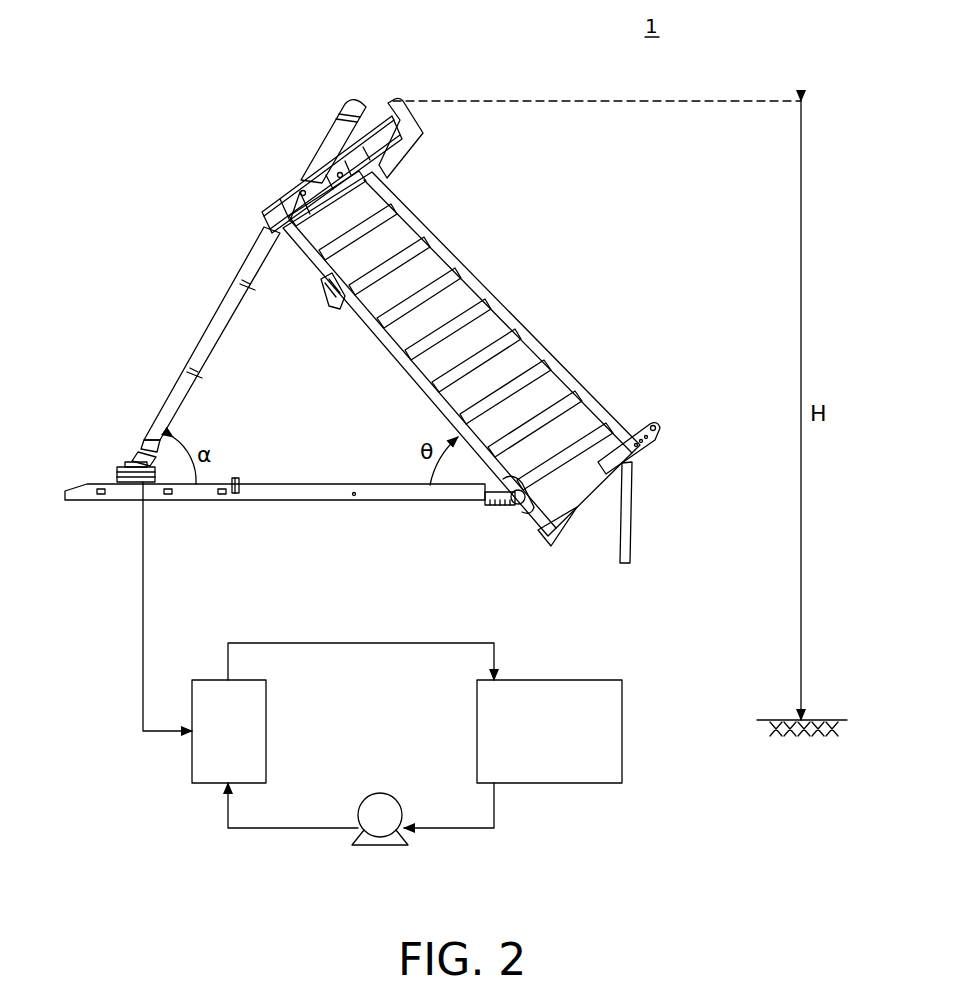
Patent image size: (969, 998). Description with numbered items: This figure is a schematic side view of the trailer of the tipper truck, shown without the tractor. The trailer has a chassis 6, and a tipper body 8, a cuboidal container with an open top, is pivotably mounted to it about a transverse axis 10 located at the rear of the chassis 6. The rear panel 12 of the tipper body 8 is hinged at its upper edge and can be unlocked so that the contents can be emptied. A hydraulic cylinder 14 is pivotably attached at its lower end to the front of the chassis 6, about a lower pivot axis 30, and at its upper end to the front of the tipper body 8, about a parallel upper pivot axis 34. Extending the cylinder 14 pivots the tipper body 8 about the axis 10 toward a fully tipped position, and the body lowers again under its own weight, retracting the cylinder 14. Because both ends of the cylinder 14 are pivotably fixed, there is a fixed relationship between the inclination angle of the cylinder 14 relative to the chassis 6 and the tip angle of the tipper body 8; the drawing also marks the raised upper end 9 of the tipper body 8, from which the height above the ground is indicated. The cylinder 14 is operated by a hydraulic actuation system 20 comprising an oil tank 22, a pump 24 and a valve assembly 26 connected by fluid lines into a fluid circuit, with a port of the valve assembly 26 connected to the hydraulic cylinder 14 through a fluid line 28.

The trailer chassis 6 is at (285, 492).
The tipper body 8 is at (513, 302).
The top end of ladder 9 is at (393, 98).
The transverse axis 10 is at (521, 505).
The rear panel 12 is at (632, 513).
The hydraulic cylinder 14 is at (222, 313).
The hydraulic actuation system 20 is at (391, 696).
The oil tank 22 is at (622, 737).
The pump 24 is at (372, 842).
The valve assembly 26 is at (207, 784).
The fluid line 28 is at (143, 628).
The lower pivot axis 30 is at (120, 470).
The upper pivot axis 34 is at (305, 195).